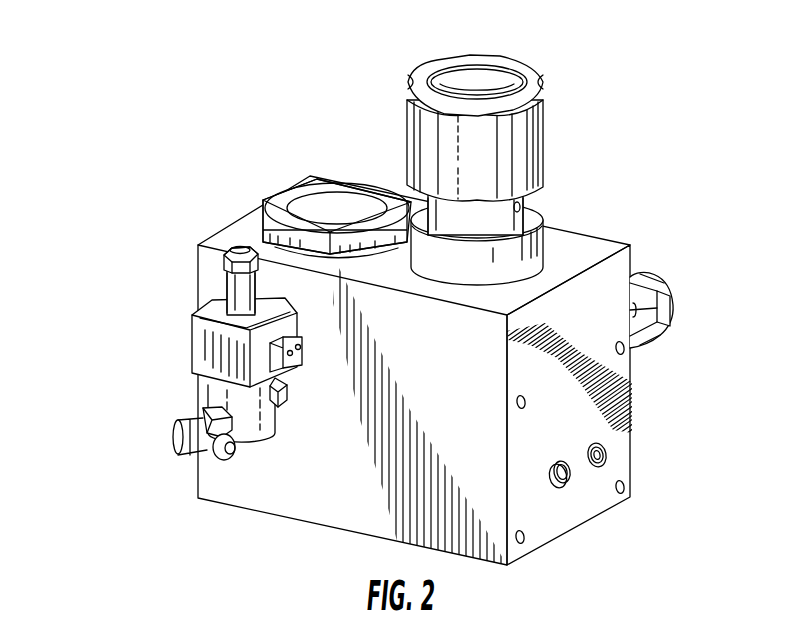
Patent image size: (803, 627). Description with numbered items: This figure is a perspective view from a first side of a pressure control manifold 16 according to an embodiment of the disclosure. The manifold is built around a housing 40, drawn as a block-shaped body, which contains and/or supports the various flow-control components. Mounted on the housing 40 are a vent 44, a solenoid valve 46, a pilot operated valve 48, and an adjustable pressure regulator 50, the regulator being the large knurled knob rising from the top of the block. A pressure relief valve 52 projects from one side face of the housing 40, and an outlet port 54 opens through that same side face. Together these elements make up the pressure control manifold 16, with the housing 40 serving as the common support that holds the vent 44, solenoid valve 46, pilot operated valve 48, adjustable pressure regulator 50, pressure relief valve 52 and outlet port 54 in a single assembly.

The pressure control manifold 16 is at (118, 237).
The housing 40 is at (586, 412).
The vent 44 is at (242, 247).
The solenoid valve 46 is at (193, 313).
The pilot operated valve 48 is at (325, 186).
The adjustable pressure regulator 50 is at (540, 70).
The pressure relief valve 52 is at (665, 274).
The outlet port 54 is at (563, 491).